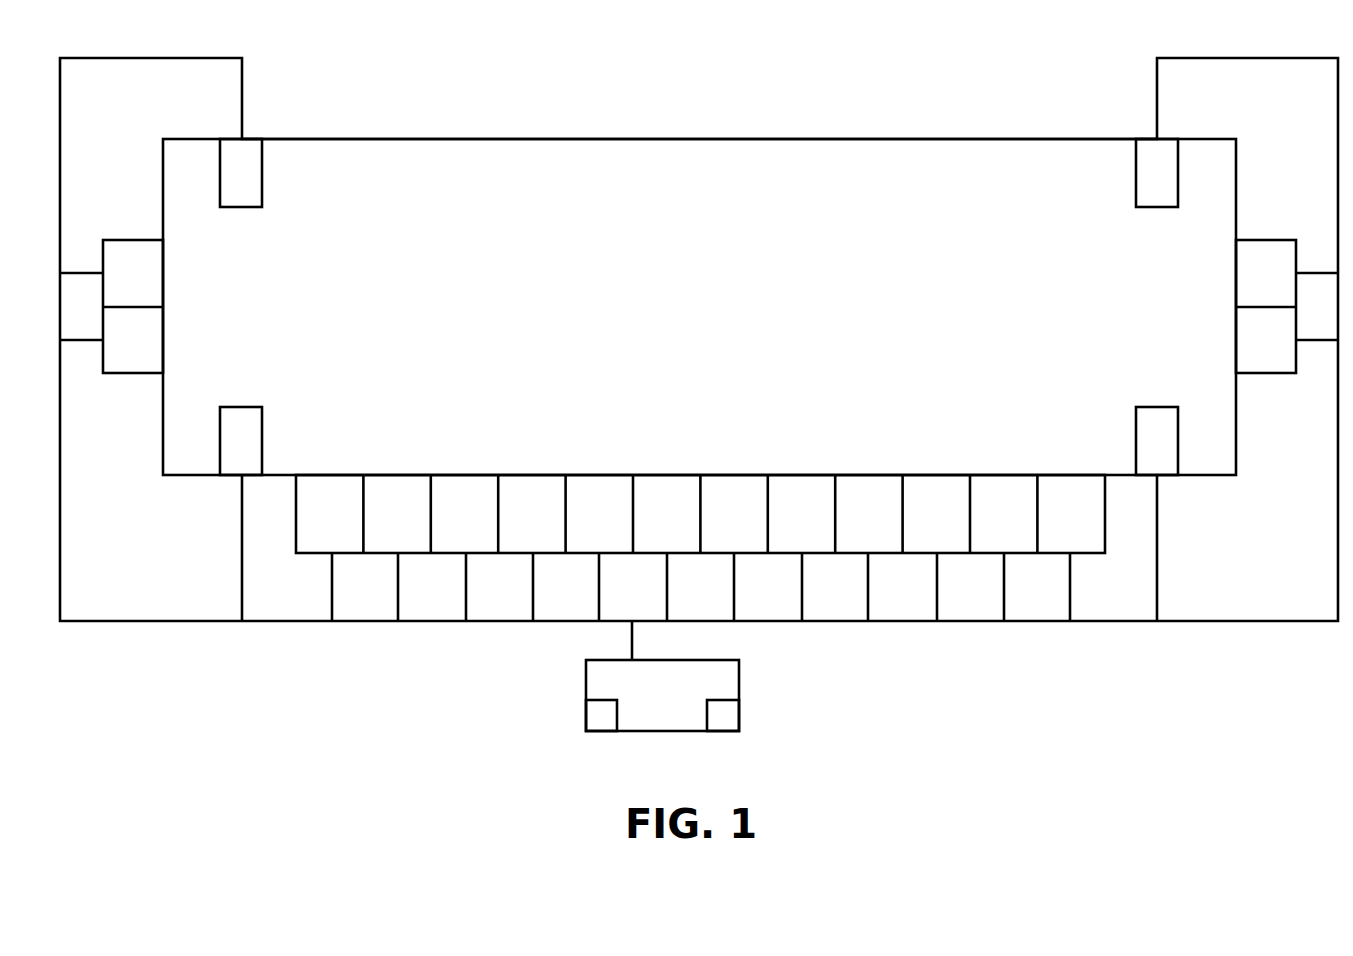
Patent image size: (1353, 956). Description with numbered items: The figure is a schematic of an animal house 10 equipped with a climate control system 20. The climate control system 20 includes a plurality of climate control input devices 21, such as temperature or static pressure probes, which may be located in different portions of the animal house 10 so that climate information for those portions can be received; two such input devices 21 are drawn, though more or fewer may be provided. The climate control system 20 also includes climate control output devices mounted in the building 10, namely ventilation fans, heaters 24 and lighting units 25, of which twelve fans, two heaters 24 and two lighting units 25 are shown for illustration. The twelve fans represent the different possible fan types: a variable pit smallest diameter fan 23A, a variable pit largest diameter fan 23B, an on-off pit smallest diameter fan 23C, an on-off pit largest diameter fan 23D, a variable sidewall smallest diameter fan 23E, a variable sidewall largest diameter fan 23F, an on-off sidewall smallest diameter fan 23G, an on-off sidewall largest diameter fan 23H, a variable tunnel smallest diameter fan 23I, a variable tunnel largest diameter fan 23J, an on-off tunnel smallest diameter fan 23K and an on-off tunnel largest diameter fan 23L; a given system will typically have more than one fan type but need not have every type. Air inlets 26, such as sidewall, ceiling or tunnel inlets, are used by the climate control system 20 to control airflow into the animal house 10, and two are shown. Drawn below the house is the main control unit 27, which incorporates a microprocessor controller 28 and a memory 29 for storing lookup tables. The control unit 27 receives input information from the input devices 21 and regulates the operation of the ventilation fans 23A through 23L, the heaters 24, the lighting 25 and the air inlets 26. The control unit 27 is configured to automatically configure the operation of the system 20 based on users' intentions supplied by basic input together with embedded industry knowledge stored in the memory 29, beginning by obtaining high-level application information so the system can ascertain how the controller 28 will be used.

The animal house 10 is at (593, 138).
The climate control system 20 is at (422, 695).
The climate control input devices 21 is at (248, 407).
The variable pit smallest diameter ventilation fan 23A is at (318, 553).
The variable pit largest diameter ventilation fan 23B is at (384, 553).
The on-off pit smallest diameter ventilation fan 23C is at (452, 553).
The on-off pit largest diameter ventilation fan 23D is at (519, 553).
The variable sidewall smallest diameter ventilation fan 23E is at (582, 553).
The variable sidewall largest diameter ventilation fan 23F is at (648, 553).
The on-off sidewall smallest diameter ventilation fan 23G is at (714, 553).
The on-off sidewall largest diameter ventilation fan 23H is at (783, 553).
The variable tunnel smallest diameter ventilation fan 23I is at (850, 553).
The variable tunnel largest diameter ventilation fan 23J is at (918, 553).
The on-off tunnel smallest diameter ventilation fan 23K is at (985, 553).
The on-off tunnel largest diameter ventilation fan 23L is at (1052, 553).
The heaters 24 is at (1262, 240).
The lighting units 25 is at (243, 207).
The air inlets 26 is at (136, 240).
The main control unit 27 is at (739, 688).
The microprocessor controller 28 is at (601, 700).
The memory 29 is at (718, 700).